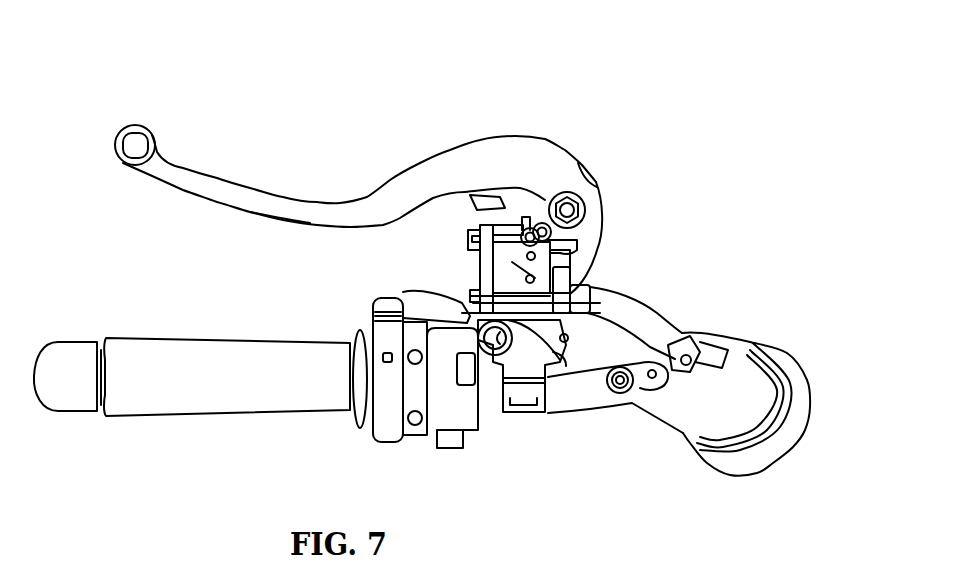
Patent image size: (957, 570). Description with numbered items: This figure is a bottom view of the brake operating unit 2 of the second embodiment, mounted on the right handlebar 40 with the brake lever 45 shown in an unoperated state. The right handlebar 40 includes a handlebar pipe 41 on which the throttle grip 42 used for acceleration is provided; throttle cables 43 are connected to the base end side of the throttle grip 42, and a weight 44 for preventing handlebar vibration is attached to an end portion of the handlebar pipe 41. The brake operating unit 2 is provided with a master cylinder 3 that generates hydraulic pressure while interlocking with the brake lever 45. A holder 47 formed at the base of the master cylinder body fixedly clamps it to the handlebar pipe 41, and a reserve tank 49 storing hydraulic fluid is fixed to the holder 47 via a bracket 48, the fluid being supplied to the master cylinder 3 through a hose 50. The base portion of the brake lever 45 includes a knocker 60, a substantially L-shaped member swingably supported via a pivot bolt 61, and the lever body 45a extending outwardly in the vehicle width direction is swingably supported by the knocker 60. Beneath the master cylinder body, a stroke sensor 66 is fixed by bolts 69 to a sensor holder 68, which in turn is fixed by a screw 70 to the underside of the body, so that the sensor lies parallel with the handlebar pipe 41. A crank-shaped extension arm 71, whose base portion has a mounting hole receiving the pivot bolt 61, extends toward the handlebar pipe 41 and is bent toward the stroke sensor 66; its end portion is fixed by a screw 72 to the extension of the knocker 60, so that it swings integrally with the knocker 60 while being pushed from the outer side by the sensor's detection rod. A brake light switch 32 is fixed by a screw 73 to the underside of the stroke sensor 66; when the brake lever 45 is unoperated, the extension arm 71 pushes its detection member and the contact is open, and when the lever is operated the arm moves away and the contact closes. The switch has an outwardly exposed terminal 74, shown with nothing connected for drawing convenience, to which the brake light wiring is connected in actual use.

The right handlebar 40 is at (350, 106).
The brake operating unit 2 is at (528, 130).
The master cylinder 3 is at (522, 383).
The brake light switch 32 is at (588, 289).
The handlebar pipe 41 is at (490, 385).
The throttle grip 42 is at (192, 350).
The throttle cables 43 is at (410, 297).
The weight 44 is at (73, 350).
The brake lever 45 is at (237, 191).
The lever body 45a is at (274, 218).
The holder 47 is at (518, 412).
The bracket 48 is at (581, 400).
The reserve tank 49 is at (766, 466).
The hose 50 is at (682, 332).
The knocker 60 is at (600, 218).
The pivot bolt 61 is at (568, 205).
The stroke sensor 66 is at (471, 236).
The sensor holder 68 is at (500, 228).
The bolts 69 is at (470, 290).
The screw 70 is at (546, 222).
The extension arm 71 is at (577, 263).
The screw 72 is at (582, 210).
The screw 73 is at (524, 228).
The terminal 74 is at (568, 339).